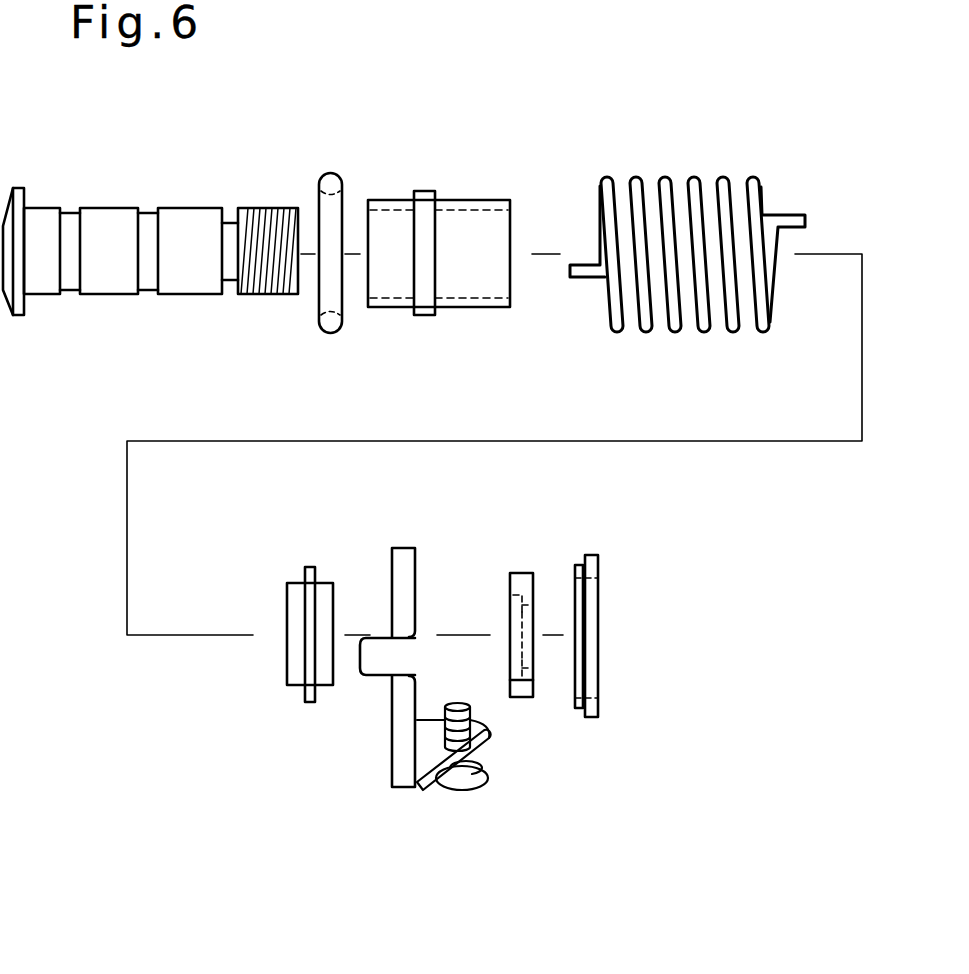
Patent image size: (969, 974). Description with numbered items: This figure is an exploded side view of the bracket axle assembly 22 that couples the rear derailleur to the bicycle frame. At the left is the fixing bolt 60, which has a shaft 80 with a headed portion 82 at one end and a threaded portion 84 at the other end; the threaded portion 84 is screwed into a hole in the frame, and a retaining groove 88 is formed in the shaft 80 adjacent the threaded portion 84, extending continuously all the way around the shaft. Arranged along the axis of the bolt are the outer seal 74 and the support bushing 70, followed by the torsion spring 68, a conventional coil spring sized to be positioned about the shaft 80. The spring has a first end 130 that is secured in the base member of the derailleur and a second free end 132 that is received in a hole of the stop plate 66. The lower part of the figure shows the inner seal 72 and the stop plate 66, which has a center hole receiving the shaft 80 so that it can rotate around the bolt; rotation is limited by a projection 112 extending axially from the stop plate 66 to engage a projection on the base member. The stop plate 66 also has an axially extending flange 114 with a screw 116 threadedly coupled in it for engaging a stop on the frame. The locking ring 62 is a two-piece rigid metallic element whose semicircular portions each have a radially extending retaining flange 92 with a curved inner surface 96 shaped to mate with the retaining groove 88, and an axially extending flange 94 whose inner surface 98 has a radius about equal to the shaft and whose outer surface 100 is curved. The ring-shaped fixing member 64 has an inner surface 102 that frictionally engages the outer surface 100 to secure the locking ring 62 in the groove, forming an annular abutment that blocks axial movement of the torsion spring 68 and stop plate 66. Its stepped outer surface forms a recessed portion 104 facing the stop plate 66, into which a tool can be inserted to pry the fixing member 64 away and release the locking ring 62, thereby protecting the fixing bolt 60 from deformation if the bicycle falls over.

The bracket axle assembly 22 is at (745, 117).
The fixing bolt 60 is at (153, 253).
The headed portion 82 is at (4, 197).
The shaft 80 is at (122, 208).
The retaining groove 88 is at (229, 222).
The threaded portion 84 is at (256, 208).
The outer seal 74 is at (330, 175).
The support bushing 70 is at (485, 200).
The torsion spring 68 is at (696, 236).
The first end 130 is at (580, 278).
The second free end 132 is at (790, 215).
The inner seal 72 is at (293, 688).
The stop plate 66 is at (332, 667).
The projection 112 is at (392, 717).
The flange 114 is at (492, 740).
The screw 116 is at (463, 792).
The locking ring 62 is at (514, 657).
The retaining flange 92 is at (540, 600).
The axially extending flange 94 is at (512, 598).
The curved inner surface 96 is at (512, 633).
The inner surface 98 is at (512, 672).
The outer surface 100 is at (515, 698).
The fixing member 64 is at (610, 636).
The inner surface 102 is at (565, 575).
The recessed portion 104 is at (580, 709).